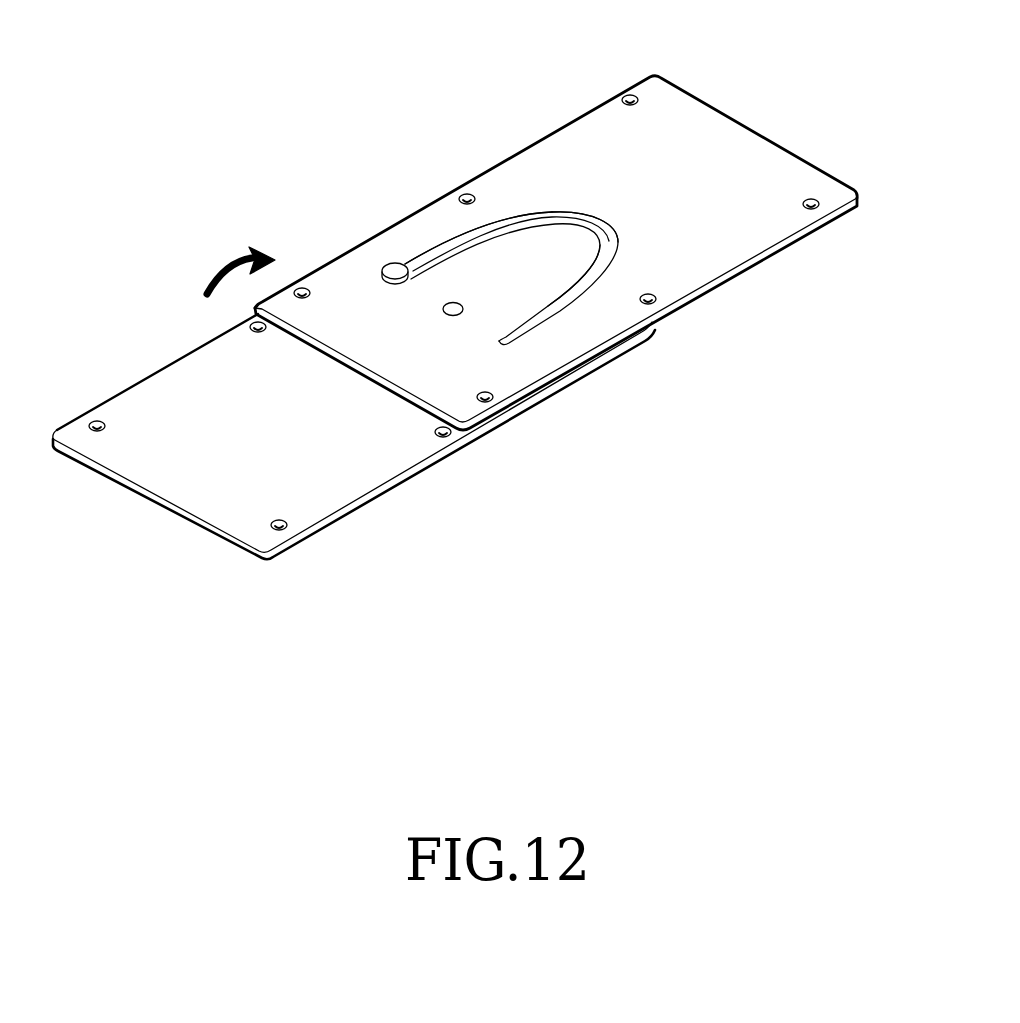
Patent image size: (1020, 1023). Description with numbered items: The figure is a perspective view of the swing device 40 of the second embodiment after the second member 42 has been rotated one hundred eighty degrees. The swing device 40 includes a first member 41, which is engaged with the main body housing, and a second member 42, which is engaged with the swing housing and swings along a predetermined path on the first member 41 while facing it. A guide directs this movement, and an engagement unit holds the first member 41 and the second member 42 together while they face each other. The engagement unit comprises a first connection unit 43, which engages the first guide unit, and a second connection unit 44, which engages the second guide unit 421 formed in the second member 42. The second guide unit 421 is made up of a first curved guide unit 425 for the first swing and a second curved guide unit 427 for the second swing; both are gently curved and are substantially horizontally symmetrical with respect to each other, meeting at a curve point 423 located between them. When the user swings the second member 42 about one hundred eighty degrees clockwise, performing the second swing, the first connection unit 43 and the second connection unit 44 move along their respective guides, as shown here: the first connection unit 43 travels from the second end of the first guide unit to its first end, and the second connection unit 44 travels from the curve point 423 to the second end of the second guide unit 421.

The swing device 40 is at (123, 236).
The first member 41 is at (357, 507).
The second member 42 is at (788, 147).
The first connection unit 43 is at (453, 316).
The second connection unit 44 is at (393, 268).
The arc-shaped guide slot 421 is at (507, 345).
The curve point 423 is at (603, 222).
The first curved guide unit 425 is at (563, 295).
The second curved guide unit 427 is at (518, 220).